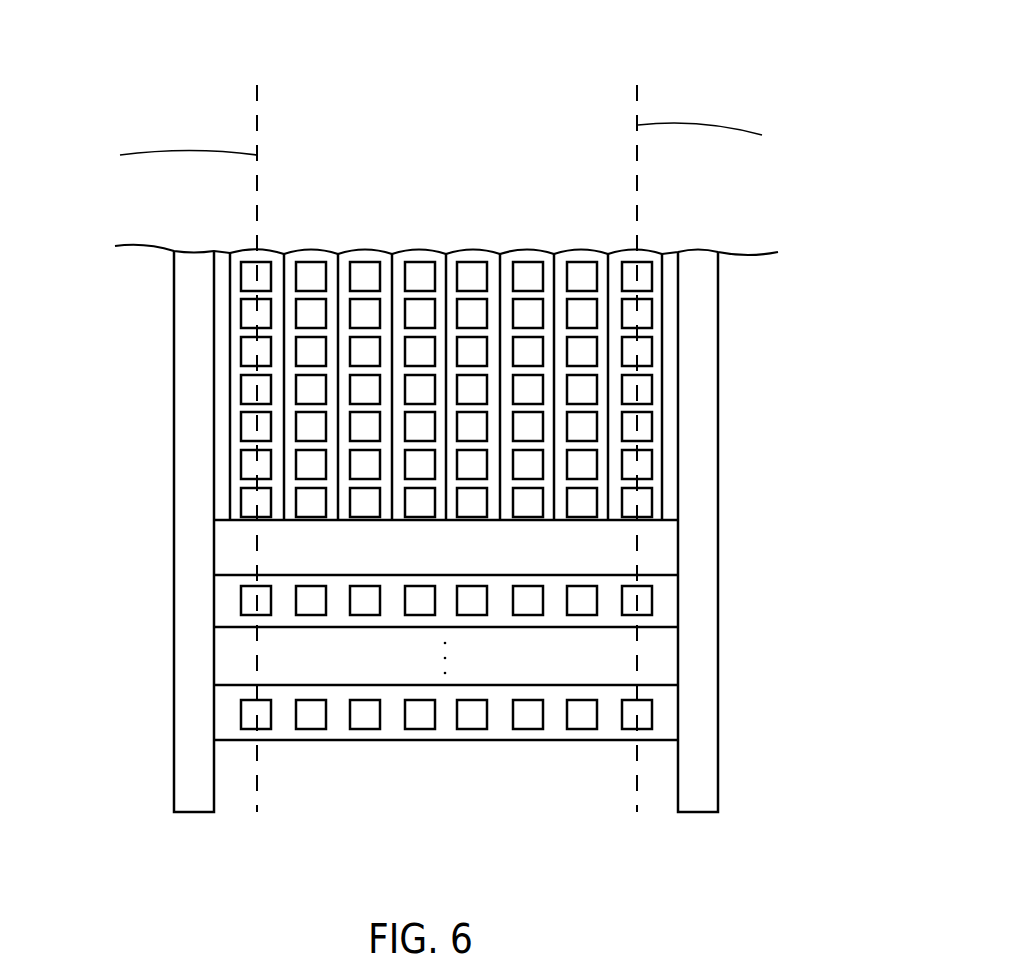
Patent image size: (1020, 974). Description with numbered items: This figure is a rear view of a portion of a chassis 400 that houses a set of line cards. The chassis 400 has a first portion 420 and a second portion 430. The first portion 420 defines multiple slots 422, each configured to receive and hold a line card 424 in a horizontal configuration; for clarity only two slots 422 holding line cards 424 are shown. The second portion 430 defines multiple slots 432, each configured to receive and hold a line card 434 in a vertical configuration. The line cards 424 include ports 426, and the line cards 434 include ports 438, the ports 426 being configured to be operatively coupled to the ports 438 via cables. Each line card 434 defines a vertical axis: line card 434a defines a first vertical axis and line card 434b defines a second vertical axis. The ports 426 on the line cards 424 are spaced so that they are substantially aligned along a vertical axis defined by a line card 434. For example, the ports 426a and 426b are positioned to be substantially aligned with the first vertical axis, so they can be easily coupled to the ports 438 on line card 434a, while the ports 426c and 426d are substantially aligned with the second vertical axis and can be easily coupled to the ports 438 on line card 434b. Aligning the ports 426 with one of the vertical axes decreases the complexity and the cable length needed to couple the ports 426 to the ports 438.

The chassis 400 is at (178, 55).
The first portion 420 is at (237, 743).
The slot 422 is at (213, 732).
The line card 424 is at (227, 610).
The port 426 is at (310, 713).
The port 426a is at (253, 602).
The port 426b is at (253, 713).
The port 426c is at (647, 608).
The port 426d is at (643, 708).
The second portion 430 is at (672, 358).
The slot 432 is at (230, 470).
The line card 434 is at (327, 257).
The line card 434a is at (233, 342).
The line card 434b is at (658, 393).
The port 438 is at (255, 275).